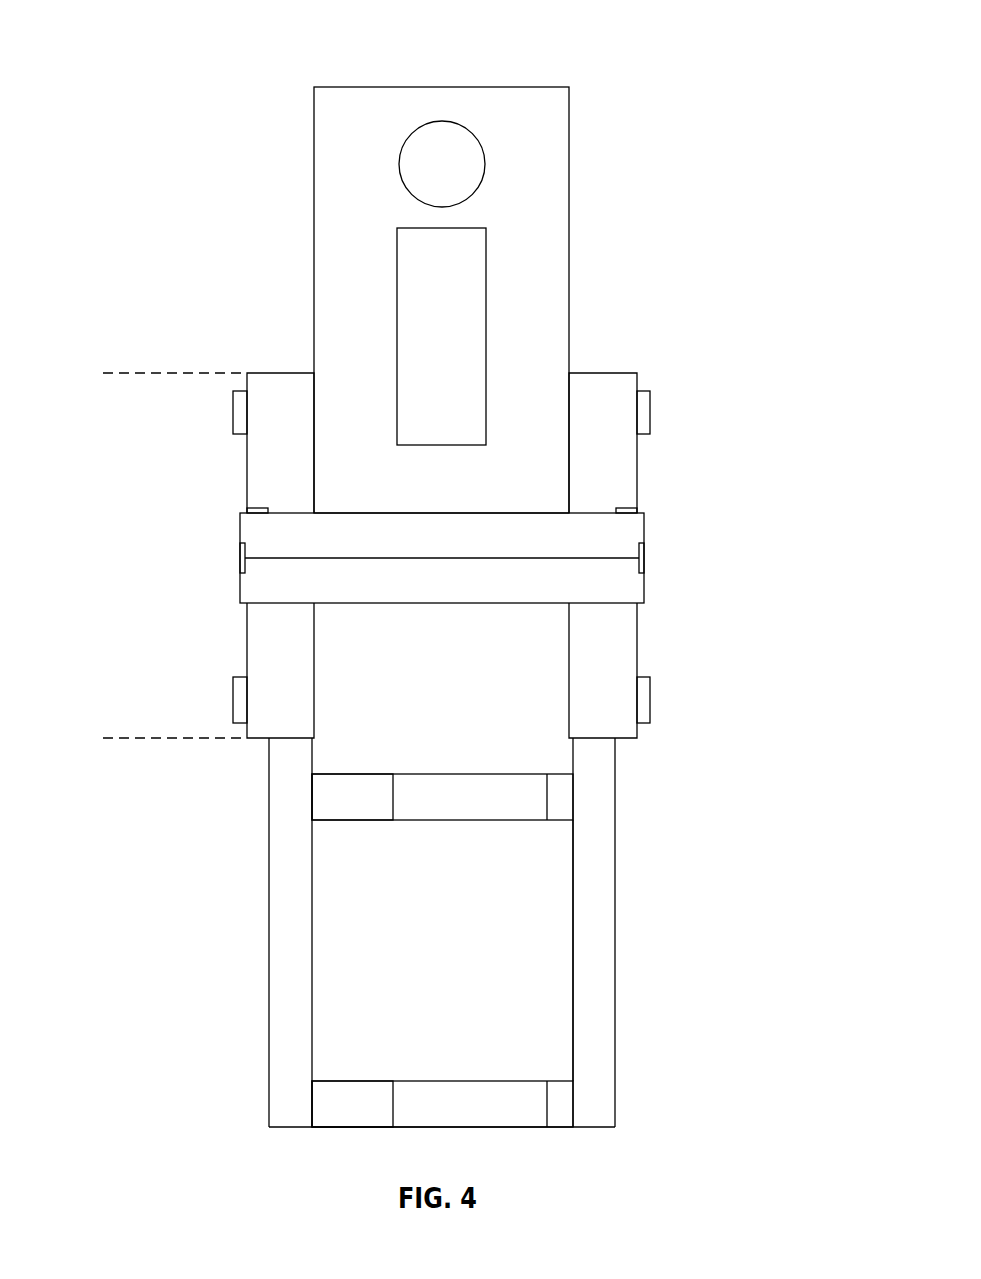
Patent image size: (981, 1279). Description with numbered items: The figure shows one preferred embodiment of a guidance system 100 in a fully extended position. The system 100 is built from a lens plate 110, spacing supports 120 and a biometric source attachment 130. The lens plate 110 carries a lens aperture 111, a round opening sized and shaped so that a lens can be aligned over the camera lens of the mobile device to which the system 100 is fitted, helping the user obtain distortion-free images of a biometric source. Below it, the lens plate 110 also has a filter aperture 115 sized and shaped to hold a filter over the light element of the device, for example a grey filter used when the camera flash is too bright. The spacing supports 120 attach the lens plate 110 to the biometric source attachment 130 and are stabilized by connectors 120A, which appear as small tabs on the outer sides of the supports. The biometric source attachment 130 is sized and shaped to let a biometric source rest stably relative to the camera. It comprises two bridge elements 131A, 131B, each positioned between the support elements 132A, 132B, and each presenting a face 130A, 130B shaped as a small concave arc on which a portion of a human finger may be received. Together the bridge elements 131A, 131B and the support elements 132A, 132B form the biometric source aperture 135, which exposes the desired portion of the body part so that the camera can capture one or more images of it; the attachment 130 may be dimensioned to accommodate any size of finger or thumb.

The guidance system 100 is at (163, 41).
The lens plate 110 is at (302, 281).
The lens aperture 111 is at (456, 162).
The filter aperture 115 is at (456, 302).
The spacing supports 120 is at (103, 373).
The connectors 120A is at (233, 412).
The biometric source attachment 130 is at (258, 929).
The face 130A is at (444, 1097).
The face 130B is at (553, 793).
The bridge element 131A is at (335, 1098).
The bridge element 131B is at (335, 810).
The support element 132A is at (585, 1037).
The support element 132B is at (287, 1011).
The biometric source aperture 135 is at (553, 930).